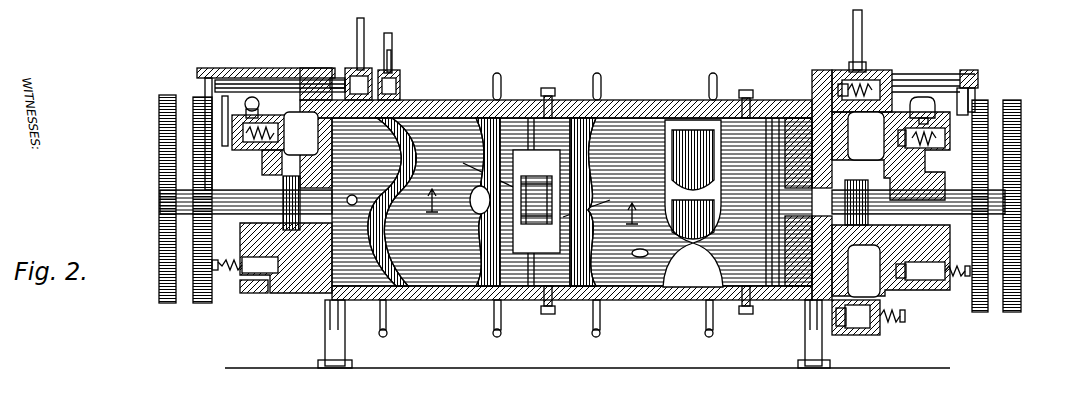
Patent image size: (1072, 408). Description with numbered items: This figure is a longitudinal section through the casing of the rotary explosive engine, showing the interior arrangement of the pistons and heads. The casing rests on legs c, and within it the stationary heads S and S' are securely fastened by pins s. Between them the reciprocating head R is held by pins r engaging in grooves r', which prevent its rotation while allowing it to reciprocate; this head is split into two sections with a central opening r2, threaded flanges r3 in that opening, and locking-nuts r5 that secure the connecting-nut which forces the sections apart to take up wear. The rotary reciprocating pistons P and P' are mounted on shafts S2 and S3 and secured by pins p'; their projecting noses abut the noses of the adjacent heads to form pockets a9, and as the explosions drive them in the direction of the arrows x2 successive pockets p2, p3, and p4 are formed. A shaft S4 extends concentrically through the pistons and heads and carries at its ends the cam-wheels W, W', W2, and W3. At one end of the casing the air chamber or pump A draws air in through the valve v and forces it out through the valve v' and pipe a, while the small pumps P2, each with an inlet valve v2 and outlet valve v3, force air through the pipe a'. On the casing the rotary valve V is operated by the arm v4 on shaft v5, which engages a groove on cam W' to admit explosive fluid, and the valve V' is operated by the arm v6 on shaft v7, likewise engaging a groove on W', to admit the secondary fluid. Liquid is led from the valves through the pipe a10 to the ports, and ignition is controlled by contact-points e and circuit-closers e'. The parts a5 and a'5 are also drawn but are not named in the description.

The air chamber or pump A is at (805, 270).
The legs c is at (340, 350).
The pipe a is at (871, 41).
The pipe a' is at (615, 76).
The valve rod a5 is at (392, 56).
The valve stem a'5 is at (392, 38).
The pockets a9 is at (386, 143).
The pipe a10 is at (497, 336).
The rotary valve V is at (423, 74).
The valve V' is at (346, 72).
The valve v is at (868, 326).
The valve v' is at (871, 173).
The inlet valve v2 is at (245, 290).
The outlet valve v3 is at (236, 112).
The arm v4 is at (215, 128).
The shaft v5 is at (285, 90).
The arm v6 is at (190, 92).
The shaft v7 is at (240, 80).
The cam-wheel W is at (131, 199).
The cam-wheel W' is at (157, 200).
The cam-wheel W2 is at (990, 145).
The cam-wheel W3 is at (1008, 232).
The contact-points e is at (993, 97).
The circuit-closers e' is at (574, 167).
The stationary head S is at (351, 180).
The stationary head S' is at (744, 173).
The shaft S2 is at (315, 208).
The shaft S3 is at (842, 250).
The shaft S4 is at (223, 220).
The rotary reciprocating piston P is at (605, 177).
The rotary reciprocating piston P' is at (638, 177).
The small pumps P2 is at (308, 228).
The pins p' is at (641, 297).
The pocket p2 is at (705, 255).
The pocket p3 is at (490, 217).
The pocket p4 is at (537, 220).
The reciprocating head R is at (515, 202).
The pins r is at (547, 205).
The grooves r' is at (517, 205).
The central opening r2 is at (605, 102).
The threaded flanges r3 is at (556, 187).
The locking-nuts r5 is at (534, 184).
The pins s is at (746, 98).
The arrows x2 is at (538, 210).